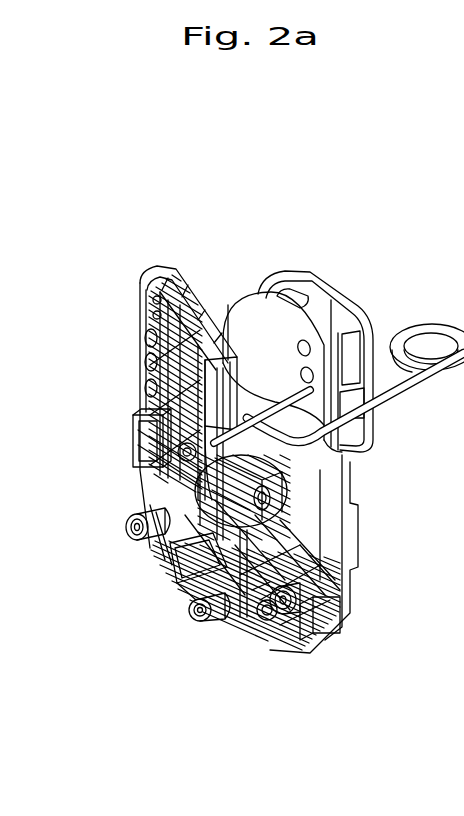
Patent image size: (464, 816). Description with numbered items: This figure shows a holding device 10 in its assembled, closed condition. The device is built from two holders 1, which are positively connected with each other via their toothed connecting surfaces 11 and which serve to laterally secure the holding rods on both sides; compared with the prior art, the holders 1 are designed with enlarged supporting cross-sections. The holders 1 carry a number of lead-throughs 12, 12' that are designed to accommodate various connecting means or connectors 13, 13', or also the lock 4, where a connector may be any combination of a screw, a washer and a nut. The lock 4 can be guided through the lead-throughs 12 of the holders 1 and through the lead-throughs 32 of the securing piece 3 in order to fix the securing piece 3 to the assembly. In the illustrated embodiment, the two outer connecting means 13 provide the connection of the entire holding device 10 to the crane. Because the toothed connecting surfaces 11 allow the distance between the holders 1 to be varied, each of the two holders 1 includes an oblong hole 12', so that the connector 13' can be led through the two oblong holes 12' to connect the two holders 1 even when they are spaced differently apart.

The holding device 10 is at (278, 154).
The holder 1 is at (167, 264).
The securing piece 3 is at (330, 284).
The lock 4 is at (425, 323).
The lead-through 32 is at (306, 400).
The toothed connecting surface 11 is at (288, 487).
The lead-through 12 is at (252, 456).
The oblong hole 12' is at (248, 633).
The connecting means 13 is at (295, 624).
The connector 13' is at (196, 629).